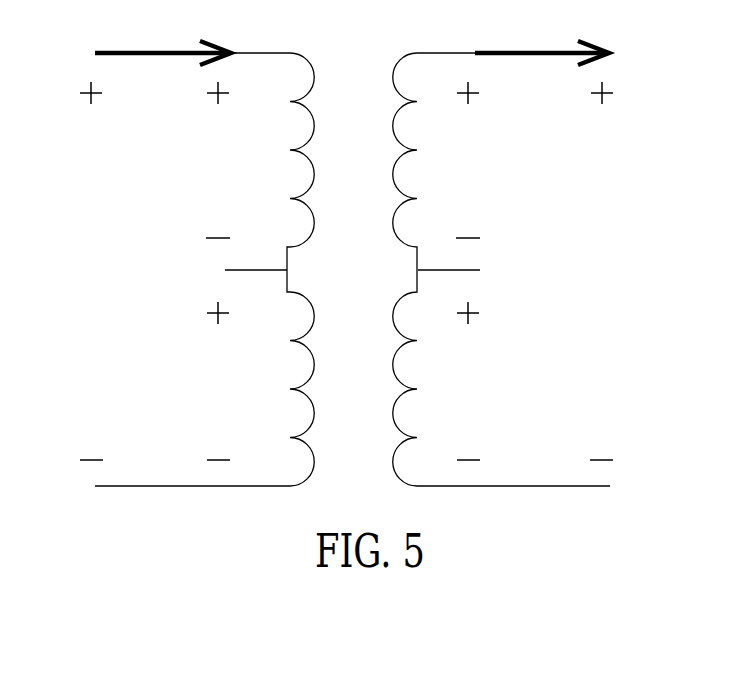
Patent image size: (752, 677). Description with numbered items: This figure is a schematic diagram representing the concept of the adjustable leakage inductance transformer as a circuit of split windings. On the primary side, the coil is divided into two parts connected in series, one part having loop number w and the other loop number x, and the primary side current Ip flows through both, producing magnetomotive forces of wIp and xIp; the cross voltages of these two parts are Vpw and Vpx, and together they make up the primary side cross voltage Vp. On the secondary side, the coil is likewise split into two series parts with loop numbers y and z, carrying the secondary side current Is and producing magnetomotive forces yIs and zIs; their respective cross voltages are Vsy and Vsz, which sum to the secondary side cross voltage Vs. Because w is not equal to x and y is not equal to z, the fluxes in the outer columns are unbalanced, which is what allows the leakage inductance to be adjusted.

The primary side current Ip is at (163, 32).
The secondary side current Is is at (542, 32).
The cross voltage of primary winding with loop number w Vpw is at (249, 161).
The cross voltage of primary winding with loop number x Vpx is at (204, 378).
The cross voltage of secondary winding with loop number y Vsy is at (443, 161).
The cross voltage of secondary winding with loop number z Vsz is at (501, 378).
The primary side cross voltage Vp is at (87, 271).
The secondary side cross voltage Vs is at (598, 271).